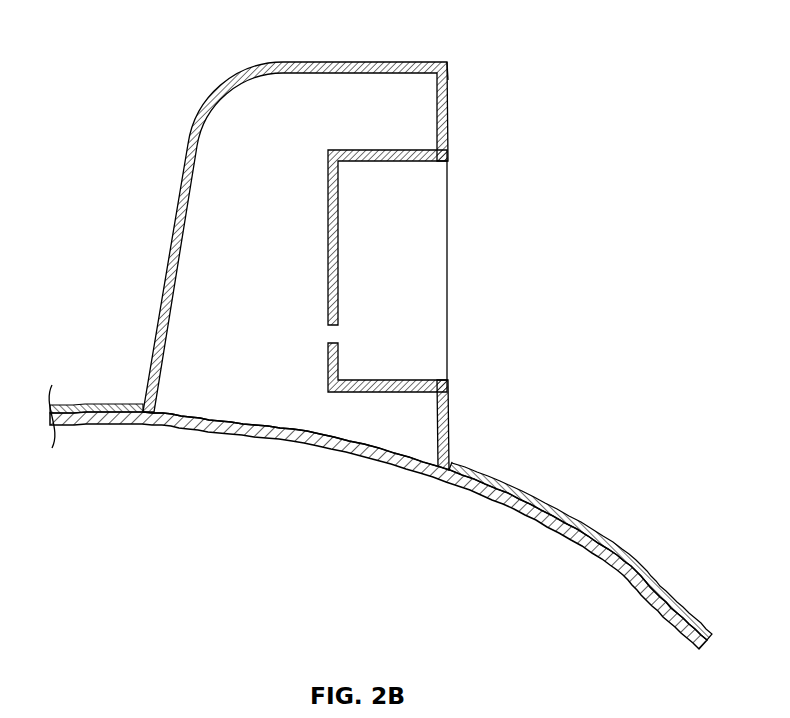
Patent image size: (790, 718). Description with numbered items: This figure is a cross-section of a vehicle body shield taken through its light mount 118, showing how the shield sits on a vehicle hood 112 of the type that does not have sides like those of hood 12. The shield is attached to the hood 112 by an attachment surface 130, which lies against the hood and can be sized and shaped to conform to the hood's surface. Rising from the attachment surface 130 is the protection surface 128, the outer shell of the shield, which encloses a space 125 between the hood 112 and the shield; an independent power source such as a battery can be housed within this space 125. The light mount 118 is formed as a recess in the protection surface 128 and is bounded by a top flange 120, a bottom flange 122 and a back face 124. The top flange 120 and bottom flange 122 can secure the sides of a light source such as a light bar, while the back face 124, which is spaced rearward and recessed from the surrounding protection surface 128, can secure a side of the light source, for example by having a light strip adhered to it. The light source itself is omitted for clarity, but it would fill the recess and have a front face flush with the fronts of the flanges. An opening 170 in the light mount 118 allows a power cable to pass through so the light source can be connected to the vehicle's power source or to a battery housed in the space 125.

The hood 12 is at (290, 460).
The hood 112 is at (287, 437).
The light mount 118 is at (447, 62).
The top flange 120 is at (416, 162).
The bottom flange 122 is at (380, 380).
The back face 124 is at (338, 253).
The space 125 is at (312, 108).
The protection surface 128 is at (177, 222).
The attachment surface 130 is at (96, 422).
The opening 170 is at (308, 332).